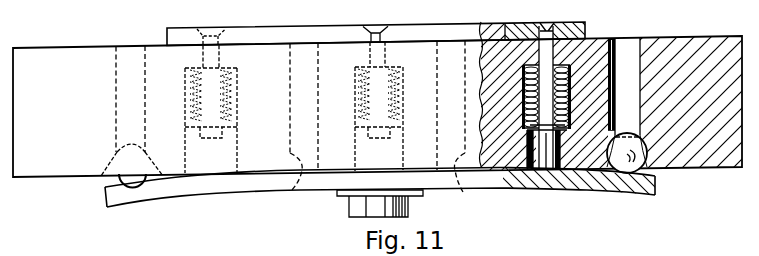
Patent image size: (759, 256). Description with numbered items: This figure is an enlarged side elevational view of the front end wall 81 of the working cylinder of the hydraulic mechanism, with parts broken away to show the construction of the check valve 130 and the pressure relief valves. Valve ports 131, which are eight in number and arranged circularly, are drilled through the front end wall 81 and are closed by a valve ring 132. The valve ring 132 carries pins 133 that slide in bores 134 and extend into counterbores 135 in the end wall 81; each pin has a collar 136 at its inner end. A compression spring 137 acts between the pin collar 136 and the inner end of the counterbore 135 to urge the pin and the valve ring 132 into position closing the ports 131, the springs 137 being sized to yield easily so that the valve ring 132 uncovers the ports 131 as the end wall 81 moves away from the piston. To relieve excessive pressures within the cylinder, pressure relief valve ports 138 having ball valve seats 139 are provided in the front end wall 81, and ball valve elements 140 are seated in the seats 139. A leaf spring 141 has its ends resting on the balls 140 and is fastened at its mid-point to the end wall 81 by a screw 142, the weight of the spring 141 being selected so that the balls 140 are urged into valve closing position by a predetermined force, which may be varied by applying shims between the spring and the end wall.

The front end wall 81 is at (690, 45).
The valve 130 is at (354, 19).
The valve ports 131 is at (379, 130).
The valve ring 132 is at (521, 22).
The pins 133 is at (549, 22).
The bores 134 is at (587, 37).
The counterbores 135 is at (572, 186).
The collar 136 is at (539, 183).
The compression spring 137 is at (512, 187).
The pressure relief valve ports 138 is at (634, 43).
The ball valve seats 139 is at (648, 162).
The ball valve elements 140 is at (115, 178).
The leaf spring 141 is at (612, 188).
The screw 142 is at (357, 208).